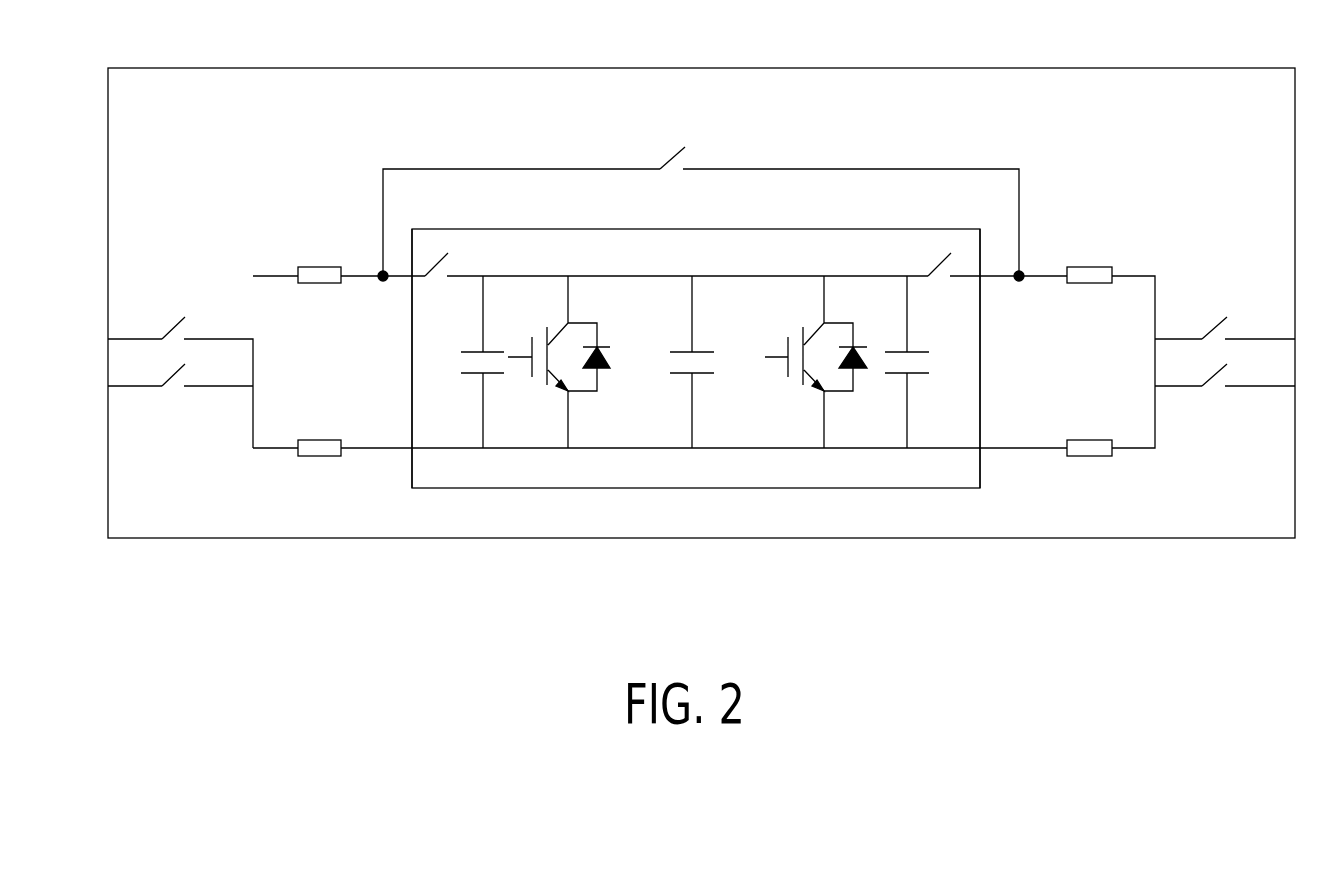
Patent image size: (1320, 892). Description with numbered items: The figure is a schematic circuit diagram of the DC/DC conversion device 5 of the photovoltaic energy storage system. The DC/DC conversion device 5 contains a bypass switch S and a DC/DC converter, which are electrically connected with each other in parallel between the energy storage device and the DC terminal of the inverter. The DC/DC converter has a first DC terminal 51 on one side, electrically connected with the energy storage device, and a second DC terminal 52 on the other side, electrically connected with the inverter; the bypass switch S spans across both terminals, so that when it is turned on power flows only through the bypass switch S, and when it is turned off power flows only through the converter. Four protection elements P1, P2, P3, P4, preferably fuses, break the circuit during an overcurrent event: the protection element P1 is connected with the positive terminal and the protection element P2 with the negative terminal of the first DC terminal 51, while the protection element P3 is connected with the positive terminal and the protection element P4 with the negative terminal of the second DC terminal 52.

The DC/DC conversion device 5 is at (710, 68).
The bypass switch S is at (659, 126).
The protection element P1 is at (319, 258).
The protection element P2 is at (319, 467).
The protection element P3 is at (1089, 257).
The protection element P4 is at (1089, 465).
The first DC terminal 51 is at (412, 276).
The second DC terminal 52 is at (980, 276).